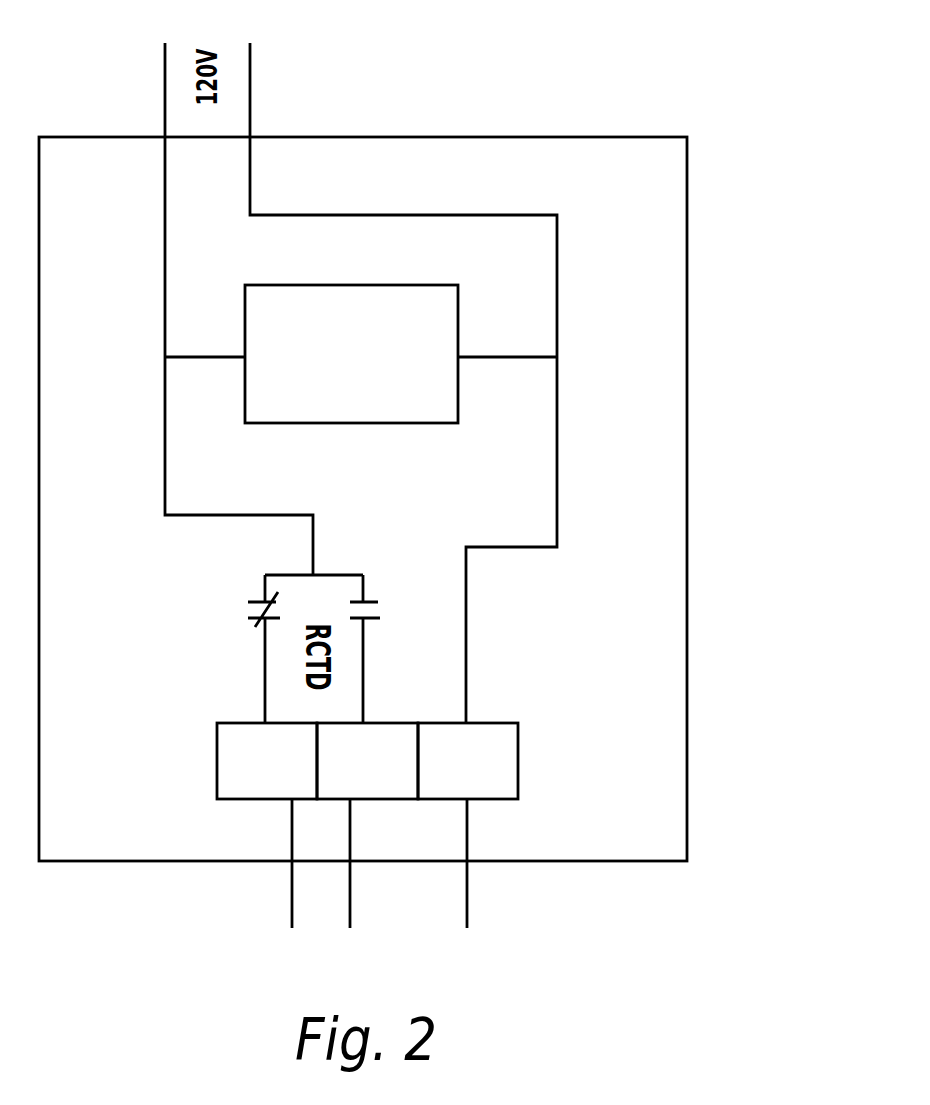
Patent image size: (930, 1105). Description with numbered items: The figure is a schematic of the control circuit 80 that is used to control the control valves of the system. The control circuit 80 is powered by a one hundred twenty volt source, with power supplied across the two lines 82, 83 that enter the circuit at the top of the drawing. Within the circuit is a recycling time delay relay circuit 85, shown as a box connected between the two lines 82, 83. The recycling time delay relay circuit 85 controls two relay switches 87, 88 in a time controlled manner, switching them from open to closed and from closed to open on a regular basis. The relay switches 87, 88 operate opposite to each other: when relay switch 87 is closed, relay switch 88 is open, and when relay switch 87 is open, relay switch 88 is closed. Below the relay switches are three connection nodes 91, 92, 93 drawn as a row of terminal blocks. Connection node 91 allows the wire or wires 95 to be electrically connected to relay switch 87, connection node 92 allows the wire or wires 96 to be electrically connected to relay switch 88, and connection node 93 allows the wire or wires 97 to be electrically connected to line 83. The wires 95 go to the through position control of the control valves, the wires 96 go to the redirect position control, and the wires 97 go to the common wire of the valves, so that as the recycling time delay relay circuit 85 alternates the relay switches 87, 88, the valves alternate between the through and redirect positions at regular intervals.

The control circuit 80 is at (599, 73).
The line 82 is at (165, 88).
The line 83 is at (250, 96).
The recycling time delay relay circuit 85 is at (440, 293).
The relay switch 87 is at (248, 607).
The relay switch 88 is at (378, 610).
The connection node 91 is at (232, 757).
The connection node 92 is at (367, 735).
The connection node 93 is at (508, 768).
The wires 95 is at (283, 885).
The wires 96 is at (350, 885).
The wires 97 is at (463, 882).